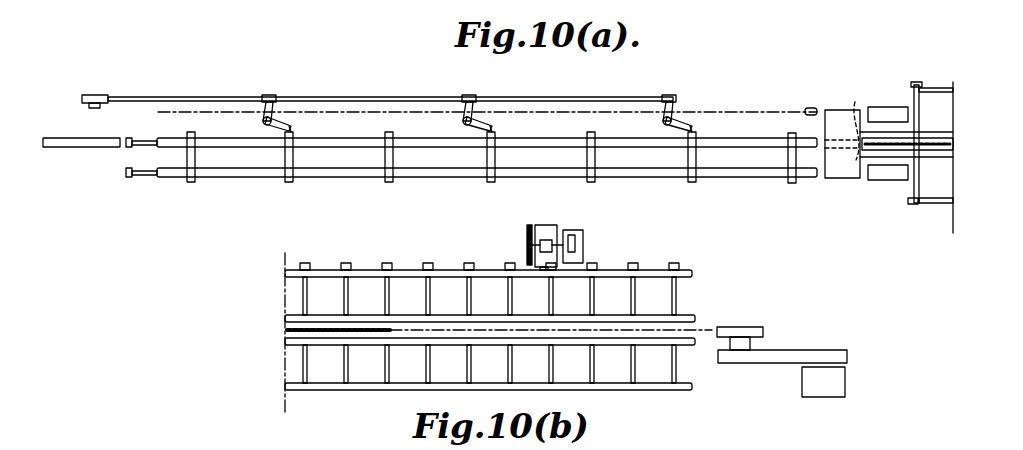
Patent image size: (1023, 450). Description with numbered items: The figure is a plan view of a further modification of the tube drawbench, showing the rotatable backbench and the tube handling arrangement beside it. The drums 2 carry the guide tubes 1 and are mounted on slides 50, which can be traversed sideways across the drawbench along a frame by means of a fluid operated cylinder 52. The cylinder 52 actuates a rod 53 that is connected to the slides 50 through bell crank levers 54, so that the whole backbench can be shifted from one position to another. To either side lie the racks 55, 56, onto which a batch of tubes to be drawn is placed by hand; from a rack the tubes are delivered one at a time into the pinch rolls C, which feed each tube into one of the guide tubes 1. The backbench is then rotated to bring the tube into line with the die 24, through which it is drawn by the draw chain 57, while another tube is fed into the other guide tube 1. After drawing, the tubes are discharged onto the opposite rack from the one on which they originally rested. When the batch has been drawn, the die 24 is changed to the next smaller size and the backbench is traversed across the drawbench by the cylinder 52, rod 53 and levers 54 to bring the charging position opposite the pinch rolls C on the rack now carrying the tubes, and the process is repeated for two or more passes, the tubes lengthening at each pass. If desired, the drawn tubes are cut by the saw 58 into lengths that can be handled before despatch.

In FIG. 10A, the guide tube 1 is at (271, 172).
In FIG. 10A, the drum 2 is at (190, 182).
In FIG. 10A, the die 24 is at (842, 133).
In FIG. 10A, the slide 50 is at (292, 183).
In FIG. 10A, the fluid operated cylinder 52 is at (105, 89).
In FIG. 10A, the rod 53 is at (426, 96).
In FIG. 10A, the bell crank lever 54 is at (277, 118).
In FIG. 10A, the rack 55 is at (954, 108).
In FIG. 10B, the rack 55 is at (347, 277).
In FIG. 10A, the rack 56 is at (954, 172).
In FIG. 10B, the rack 56 is at (380, 385).
In FIG. 10A, the draw chain 57 is at (955, 142).
In FIG. 10B, the draw chain 57 is at (285, 330).
In FIG. 10B, the saw 58 is at (527, 237).
In FIG. 10A, the pinch rolls C is at (899, 102).